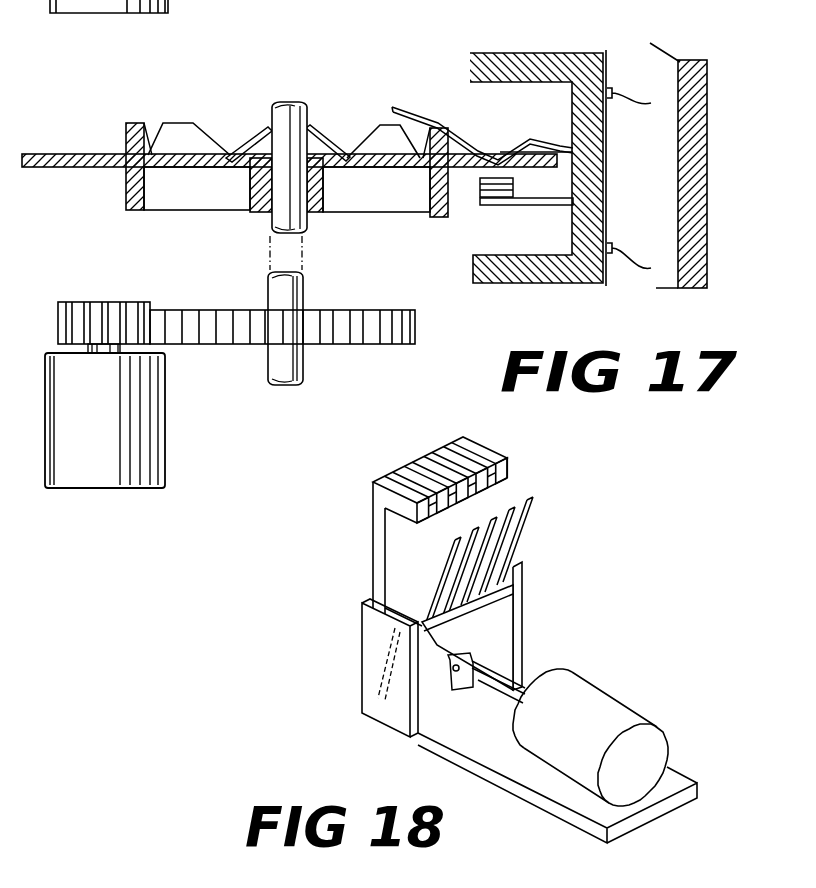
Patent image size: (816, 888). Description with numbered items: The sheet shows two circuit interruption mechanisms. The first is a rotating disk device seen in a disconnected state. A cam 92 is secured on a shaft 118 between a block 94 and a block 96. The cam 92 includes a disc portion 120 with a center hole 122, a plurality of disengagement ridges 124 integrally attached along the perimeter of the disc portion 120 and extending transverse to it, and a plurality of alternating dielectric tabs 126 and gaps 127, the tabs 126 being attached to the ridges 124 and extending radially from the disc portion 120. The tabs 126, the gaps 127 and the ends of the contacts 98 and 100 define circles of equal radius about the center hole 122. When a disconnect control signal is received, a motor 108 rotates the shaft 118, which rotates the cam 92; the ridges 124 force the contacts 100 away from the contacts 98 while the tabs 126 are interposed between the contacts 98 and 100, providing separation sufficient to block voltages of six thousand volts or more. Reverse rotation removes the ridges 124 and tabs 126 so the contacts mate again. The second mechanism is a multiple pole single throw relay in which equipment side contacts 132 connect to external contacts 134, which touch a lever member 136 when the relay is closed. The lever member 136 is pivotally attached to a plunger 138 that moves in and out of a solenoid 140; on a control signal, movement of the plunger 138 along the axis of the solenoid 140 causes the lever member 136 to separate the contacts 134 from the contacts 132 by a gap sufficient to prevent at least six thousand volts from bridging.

In FIG. 17, the cam 92 is at (259, 167).
In FIG. 17, the block 94 is at (553, 62).
In FIG. 17, the block 96 is at (520, 283).
In FIG. 17, the contact 98 is at (499, 207).
In FIG. 17, the contact 100 is at (483, 150).
In FIG. 17, the motor 108 is at (165, 432).
In FIG. 17, the shaft 118 is at (303, 228).
In FIG. 17, the disc portion 120 is at (200, 173).
In FIG. 17, the center hole 122 is at (291, 104).
In FIG. 17, the disengagement ridge 124 is at (128, 123).
In FIG. 17, the dielectric tab 126 is at (88, 152).
In FIG. 17, the gap 127 is at (232, 143).
In FIG. 18, the equipment side contact 132 is at (507, 475).
In FIG. 18, the external contact 134 is at (526, 500).
In FIG. 18, the lever member 136 is at (425, 675).
In FIG. 18, the plunger 138 is at (527, 693).
In FIG. 18, the solenoid 140 is at (603, 708).